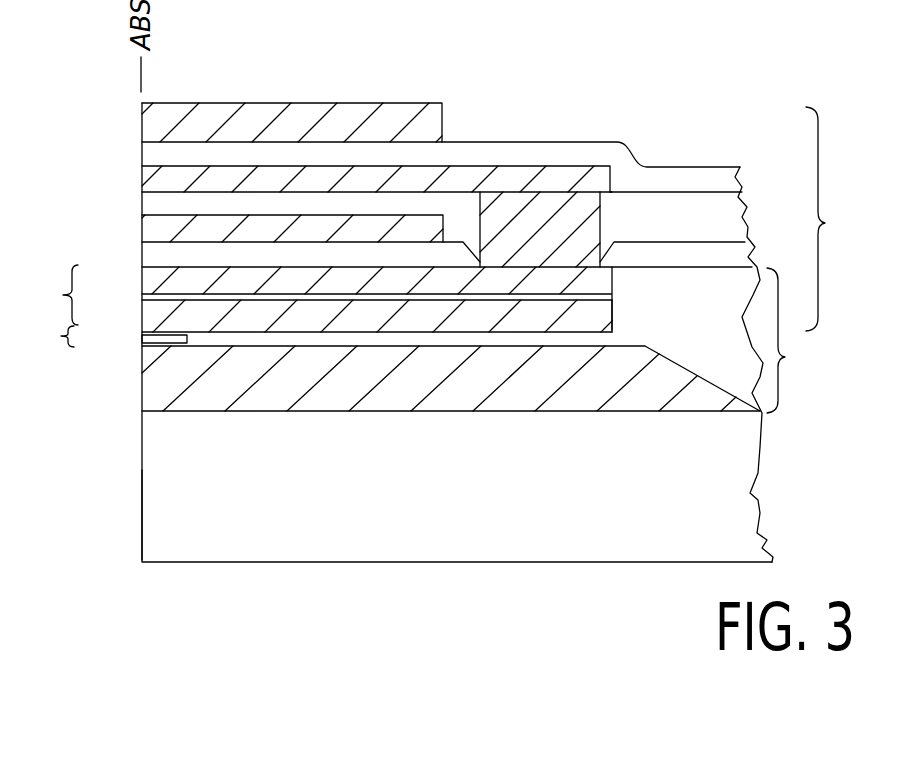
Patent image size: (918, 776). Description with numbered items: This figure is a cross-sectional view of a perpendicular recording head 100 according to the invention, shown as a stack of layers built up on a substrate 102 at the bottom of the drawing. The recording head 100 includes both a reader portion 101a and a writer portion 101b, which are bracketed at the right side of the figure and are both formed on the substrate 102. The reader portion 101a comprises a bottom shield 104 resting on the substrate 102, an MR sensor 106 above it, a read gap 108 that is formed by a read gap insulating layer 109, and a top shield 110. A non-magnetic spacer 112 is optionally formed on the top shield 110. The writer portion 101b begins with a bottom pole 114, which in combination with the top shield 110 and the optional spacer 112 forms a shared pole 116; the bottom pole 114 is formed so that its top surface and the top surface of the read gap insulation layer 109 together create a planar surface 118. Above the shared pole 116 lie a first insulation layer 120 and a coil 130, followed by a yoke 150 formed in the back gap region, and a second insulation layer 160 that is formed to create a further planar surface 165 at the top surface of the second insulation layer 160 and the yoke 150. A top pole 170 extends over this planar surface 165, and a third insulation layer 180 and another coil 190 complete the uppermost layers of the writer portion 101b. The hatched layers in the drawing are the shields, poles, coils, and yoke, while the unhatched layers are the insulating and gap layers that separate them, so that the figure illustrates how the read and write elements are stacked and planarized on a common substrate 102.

The perpendicular recording head 100 is at (693, 155).
The reader portion 101a is at (806, 340).
The writer portion 101b is at (843, 219).
The substrate 102 is at (156, 446).
The bottom shield 104 is at (158, 377).
The MR sensor 106 is at (140, 340).
The read gap 108 is at (42, 344).
The read gap insulating layer 109 is at (710, 331).
The top shield 110 is at (150, 313).
The non-magnetic spacer 112 is at (147, 295).
The bottom pole 114 is at (157, 277).
The shared pole 116 is at (48, 295).
The planar surface 118 is at (675, 267).
The first insulation layer 120 is at (160, 254).
The coil 130 is at (158, 230).
The yoke 150 is at (563, 223).
The second insulation layer 160 is at (157, 202).
The planar surface 165 is at (628, 190).
The top pole 170 is at (150, 177).
The third insulation layer 180 is at (153, 152).
The coil 190 is at (148, 118).